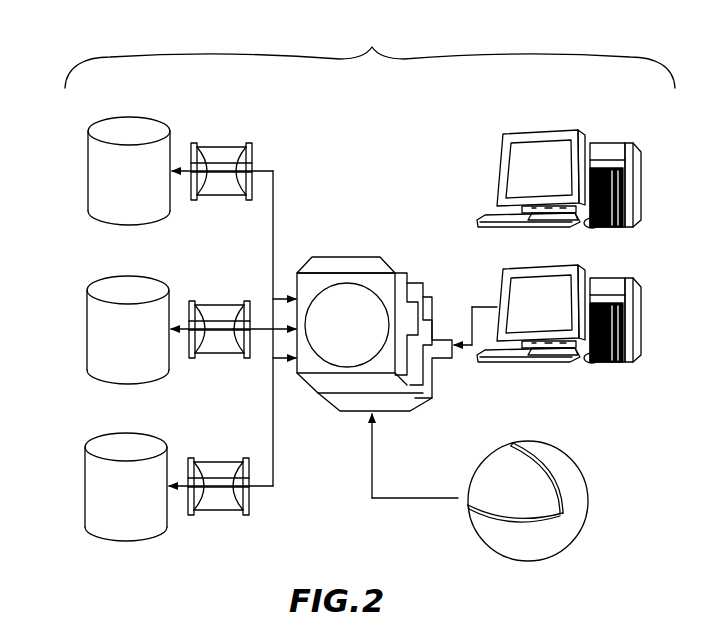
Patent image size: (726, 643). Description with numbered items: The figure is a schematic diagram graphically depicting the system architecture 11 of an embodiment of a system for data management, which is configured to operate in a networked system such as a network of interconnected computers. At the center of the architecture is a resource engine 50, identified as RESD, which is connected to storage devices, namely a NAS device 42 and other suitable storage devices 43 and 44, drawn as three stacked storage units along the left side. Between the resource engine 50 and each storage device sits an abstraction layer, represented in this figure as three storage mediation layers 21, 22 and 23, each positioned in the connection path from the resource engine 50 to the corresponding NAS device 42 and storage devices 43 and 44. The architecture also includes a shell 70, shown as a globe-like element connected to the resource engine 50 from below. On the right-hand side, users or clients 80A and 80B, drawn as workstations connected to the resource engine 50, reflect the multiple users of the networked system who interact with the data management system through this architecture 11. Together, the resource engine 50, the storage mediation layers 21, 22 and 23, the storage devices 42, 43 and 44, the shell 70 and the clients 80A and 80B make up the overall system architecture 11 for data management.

The system architecture 11 is at (370, 53).
The storage mediation layer 21 is at (222, 146).
The storage mediation layer 22 is at (220, 301).
The storage mediation layer 23 is at (218, 460).
The NAS device 42 is at (88, 170).
The storage device 43 is at (87, 328).
The storage device 44 is at (85, 485).
The resource engine 50 is at (392, 259).
The shell 70 is at (572, 455).
The client 80A is at (610, 278).
The client 80B is at (612, 142).